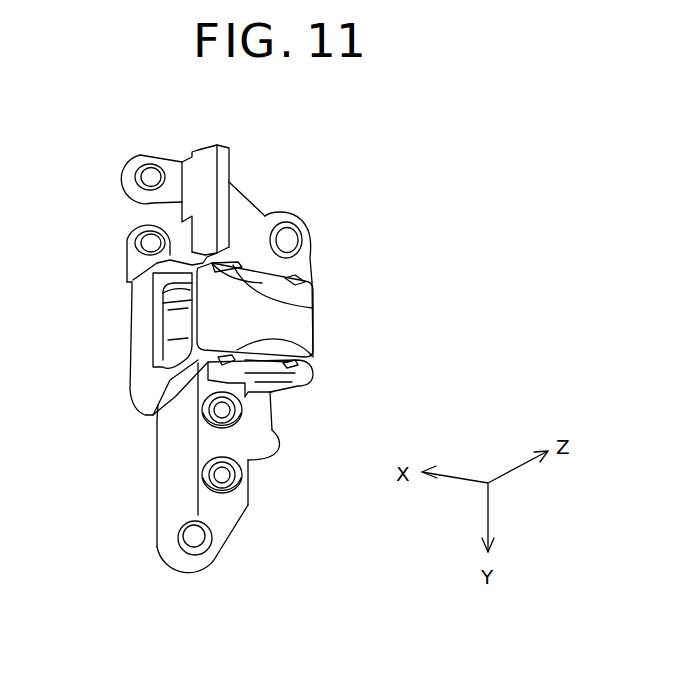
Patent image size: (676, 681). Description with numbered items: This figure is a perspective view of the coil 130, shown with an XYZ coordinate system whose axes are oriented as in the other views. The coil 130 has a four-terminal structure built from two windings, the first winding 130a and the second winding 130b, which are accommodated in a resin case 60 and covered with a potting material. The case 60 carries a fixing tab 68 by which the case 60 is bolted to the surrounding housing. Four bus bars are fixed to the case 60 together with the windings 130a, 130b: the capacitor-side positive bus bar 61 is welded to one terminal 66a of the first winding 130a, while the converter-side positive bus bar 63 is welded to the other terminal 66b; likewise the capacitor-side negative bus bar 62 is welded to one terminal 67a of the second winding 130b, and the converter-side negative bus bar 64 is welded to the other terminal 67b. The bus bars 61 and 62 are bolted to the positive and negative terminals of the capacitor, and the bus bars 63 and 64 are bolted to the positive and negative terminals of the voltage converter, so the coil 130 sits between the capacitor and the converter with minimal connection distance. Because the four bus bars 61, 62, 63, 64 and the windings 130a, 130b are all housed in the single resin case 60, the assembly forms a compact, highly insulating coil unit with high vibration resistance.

The coil 130 is at (320, 155).
The first winding 130a is at (173, 332).
The second winding 130b is at (107, 365).
The resin case 60 is at (130, 303).
The capacitor-side positive bus bar 61 is at (135, 164).
The capacitor-side negative bus bar 62 is at (127, 237).
The converter-side positive bus bar 63 is at (208, 410).
The converter-side negative bus bar 64 is at (208, 473).
The terminal of the first winding 66a is at (242, 267).
The terminal of the first winding 66b is at (292, 368).
The terminal of the second winding 67a is at (300, 312).
The terminal of the second winding 67b is at (290, 352).
The fixing tab 68 is at (298, 247).